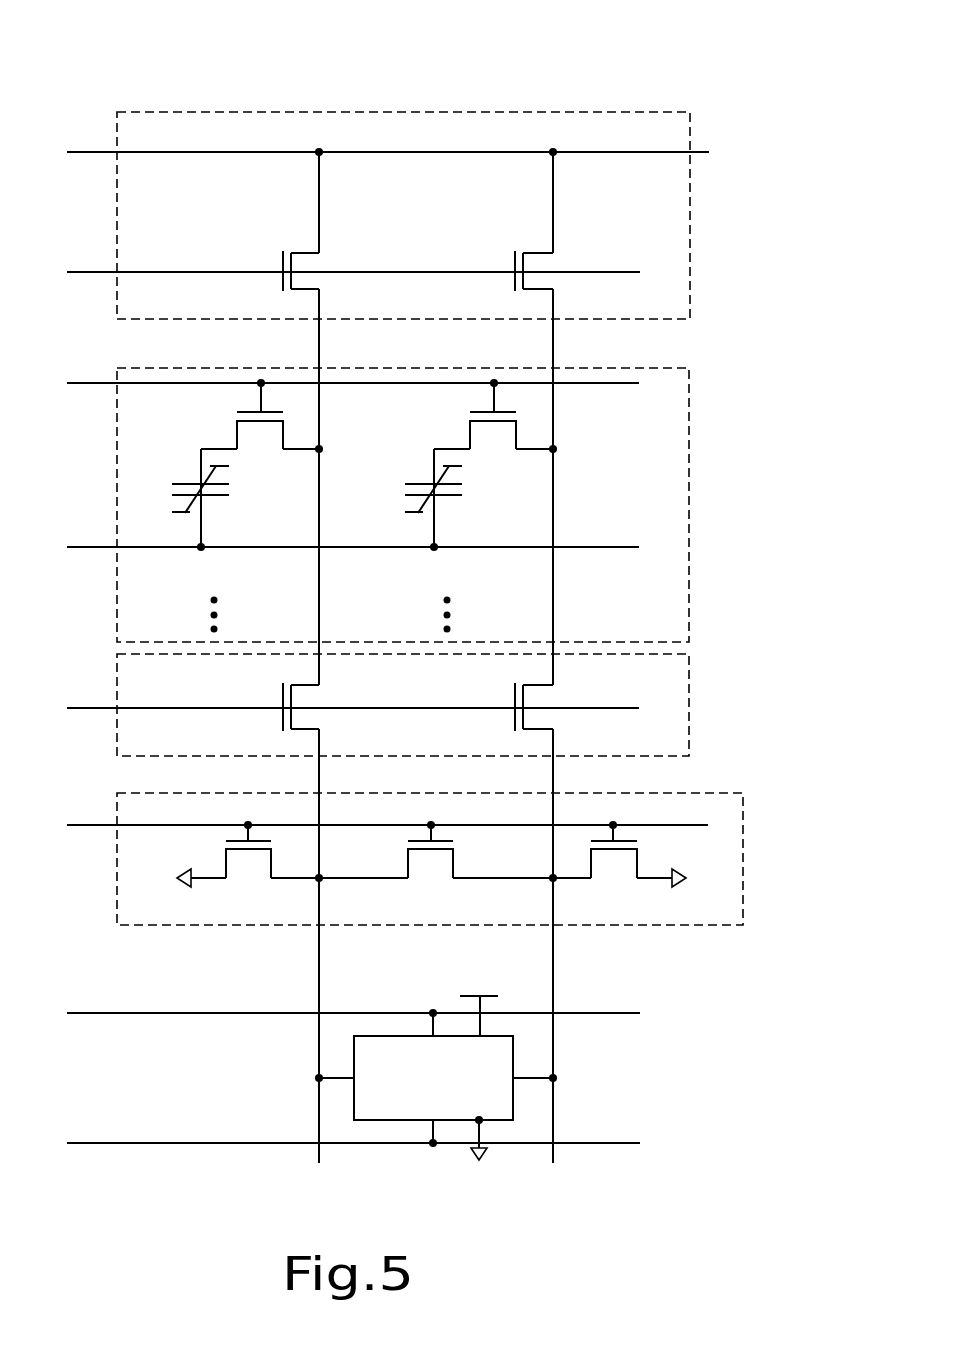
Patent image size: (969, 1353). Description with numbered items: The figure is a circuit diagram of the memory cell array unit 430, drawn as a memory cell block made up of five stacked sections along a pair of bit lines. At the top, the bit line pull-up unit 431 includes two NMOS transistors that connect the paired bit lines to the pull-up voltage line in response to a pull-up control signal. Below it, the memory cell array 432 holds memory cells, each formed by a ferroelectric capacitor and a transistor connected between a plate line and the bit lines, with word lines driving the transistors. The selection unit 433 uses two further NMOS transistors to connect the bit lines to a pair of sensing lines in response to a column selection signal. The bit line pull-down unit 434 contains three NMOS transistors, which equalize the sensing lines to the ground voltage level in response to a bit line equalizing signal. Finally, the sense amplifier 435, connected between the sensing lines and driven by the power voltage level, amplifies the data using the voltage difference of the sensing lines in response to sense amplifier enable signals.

The memory cell array unit 430 is at (609, 82).
The bit line pull-up unit 431 is at (690, 210).
The memory cell array 432 is at (689, 495).
The selection unit 433 is at (689, 717).
The bit line pull-down unit 434 is at (743, 857).
The sense amplifier 435 is at (513, 1058).